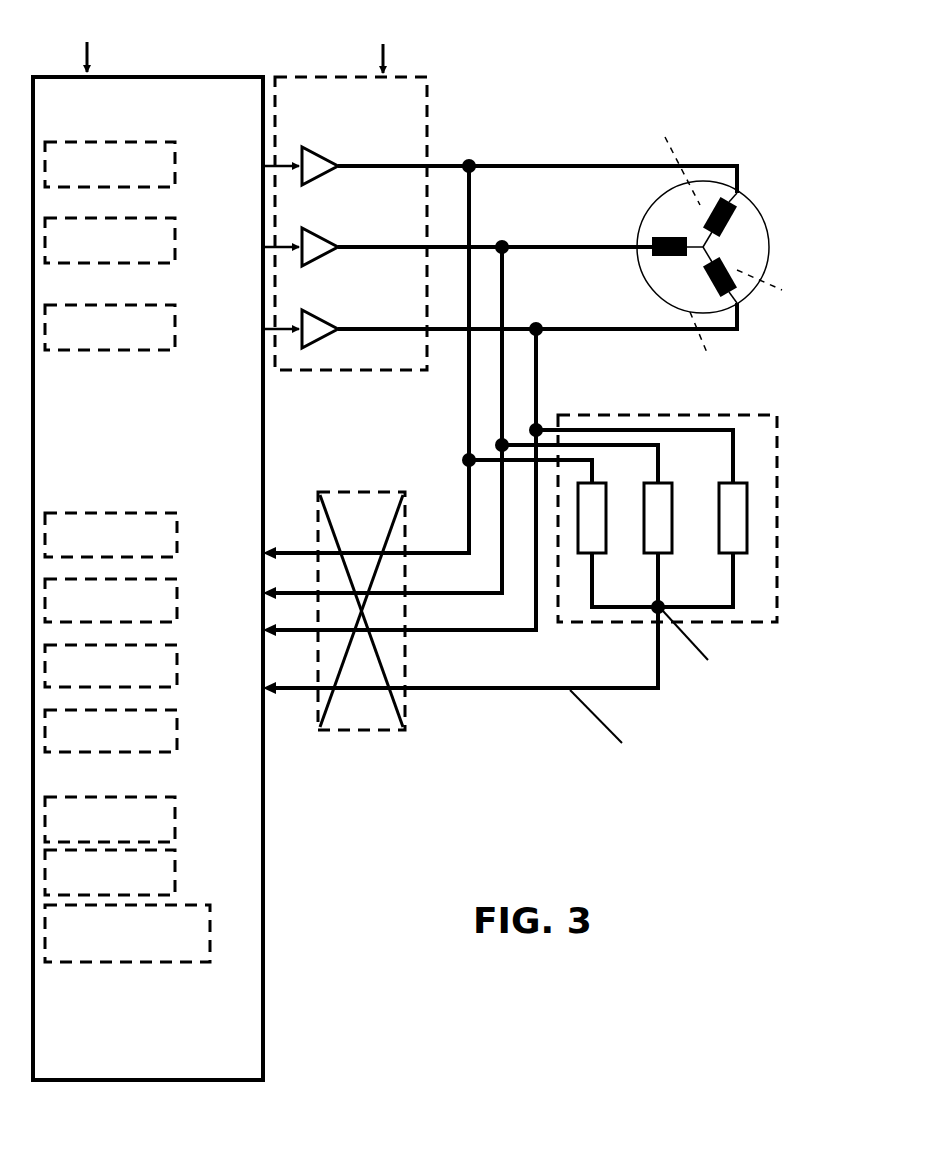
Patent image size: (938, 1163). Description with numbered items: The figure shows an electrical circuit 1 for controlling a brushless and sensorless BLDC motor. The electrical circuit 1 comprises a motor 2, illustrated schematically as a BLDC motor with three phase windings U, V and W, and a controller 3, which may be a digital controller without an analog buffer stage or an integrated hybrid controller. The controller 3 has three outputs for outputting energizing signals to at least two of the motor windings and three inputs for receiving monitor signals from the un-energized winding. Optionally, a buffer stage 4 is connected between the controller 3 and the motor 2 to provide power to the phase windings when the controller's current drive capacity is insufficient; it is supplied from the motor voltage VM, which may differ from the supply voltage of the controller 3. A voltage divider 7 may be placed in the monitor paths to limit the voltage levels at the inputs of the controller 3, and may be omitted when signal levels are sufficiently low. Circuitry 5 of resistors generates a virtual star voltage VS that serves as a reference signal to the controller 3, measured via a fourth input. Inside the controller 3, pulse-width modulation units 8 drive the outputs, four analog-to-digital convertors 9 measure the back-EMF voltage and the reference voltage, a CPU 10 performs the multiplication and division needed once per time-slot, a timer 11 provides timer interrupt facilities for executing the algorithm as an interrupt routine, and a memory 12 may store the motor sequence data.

The electrical circuit 1 is at (716, 890).
The motor 2 is at (765, 205).
The controller 3 is at (198, 77).
The buffer stage 4 is at (298, 75).
The circuitry for generating a virtual star voltage 5 is at (755, 410).
The voltage divider 7 is at (407, 708).
The PWM unit 8 is at (128, 137).
The analog-to-digital convertors 9 is at (155, 518).
The CPU 10 is at (177, 820).
The timer 11 is at (177, 875).
The memory 12 is at (173, 961).